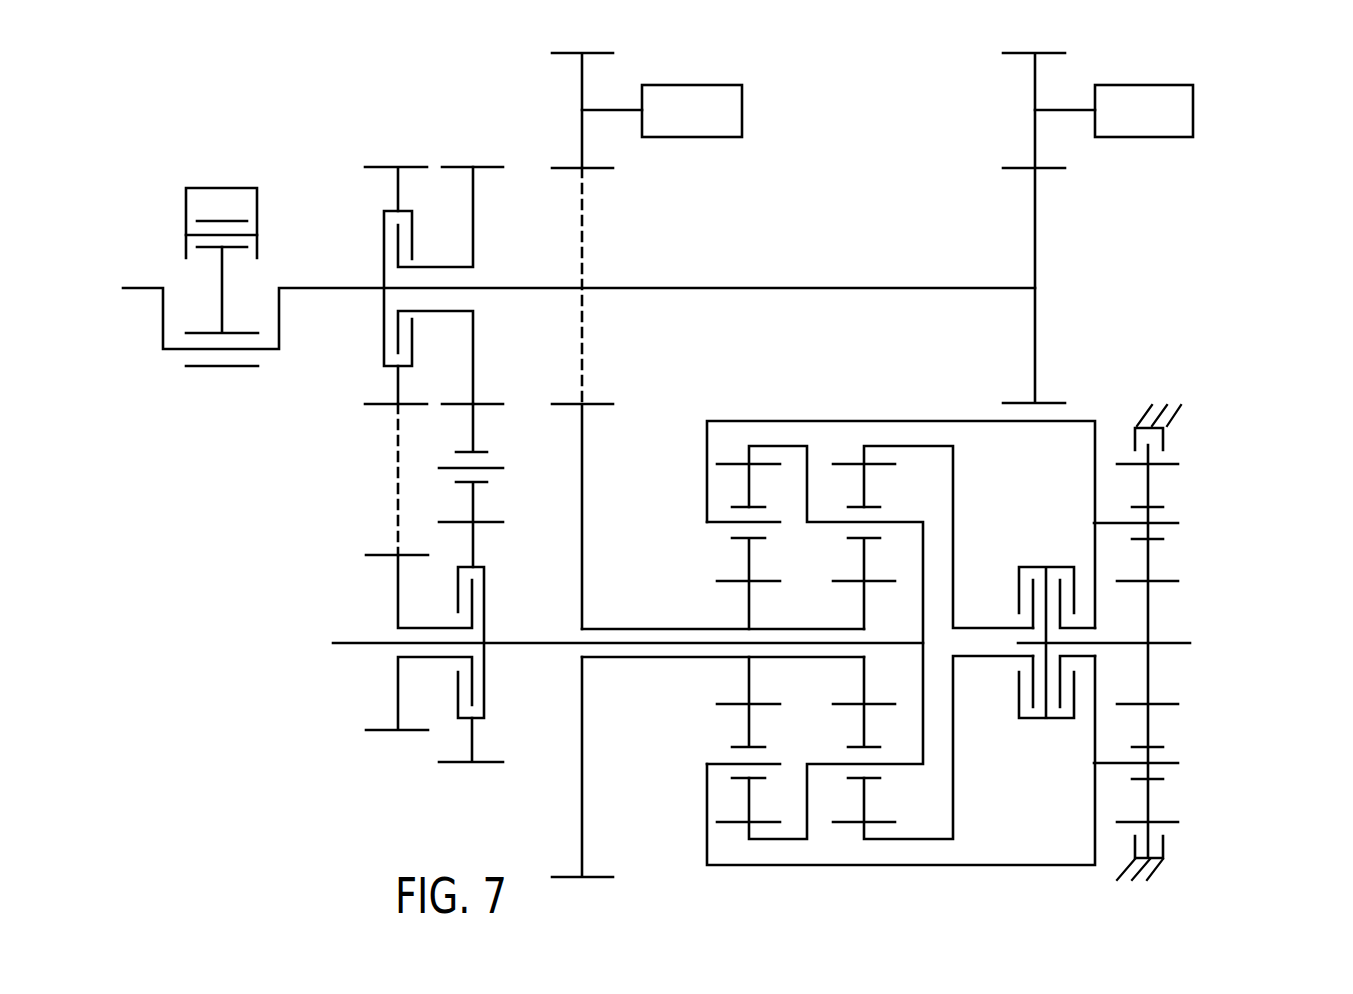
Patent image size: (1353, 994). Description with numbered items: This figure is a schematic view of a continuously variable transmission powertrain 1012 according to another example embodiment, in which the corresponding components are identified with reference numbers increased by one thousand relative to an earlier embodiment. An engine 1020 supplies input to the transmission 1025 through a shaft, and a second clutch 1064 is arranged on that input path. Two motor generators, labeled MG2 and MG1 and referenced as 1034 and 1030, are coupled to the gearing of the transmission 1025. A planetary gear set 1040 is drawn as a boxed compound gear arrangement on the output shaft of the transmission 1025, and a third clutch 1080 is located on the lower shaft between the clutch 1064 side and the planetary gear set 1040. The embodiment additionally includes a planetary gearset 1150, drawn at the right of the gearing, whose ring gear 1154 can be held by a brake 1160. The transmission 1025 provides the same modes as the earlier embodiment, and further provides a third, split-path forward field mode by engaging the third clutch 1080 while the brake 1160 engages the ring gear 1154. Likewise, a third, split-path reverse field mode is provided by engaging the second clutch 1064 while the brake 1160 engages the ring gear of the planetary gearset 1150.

The powertrain 1012 is at (283, 101).
The engine 1020 is at (208, 164).
The second clutch 1064 is at (366, 259).
The second motor generator MG2 1034 is at (692, 85).
The first motor generator MG1 1030 is at (1143, 85).
The third clutch 1080 is at (494, 583).
The transmission 1025 is at (314, 793).
The planetary gear set 1040 is at (726, 883).
The planetary gearset 1150 is at (1198, 491).
The ring gear 1154 is at (1163, 455).
The brake 1160 is at (1163, 847).